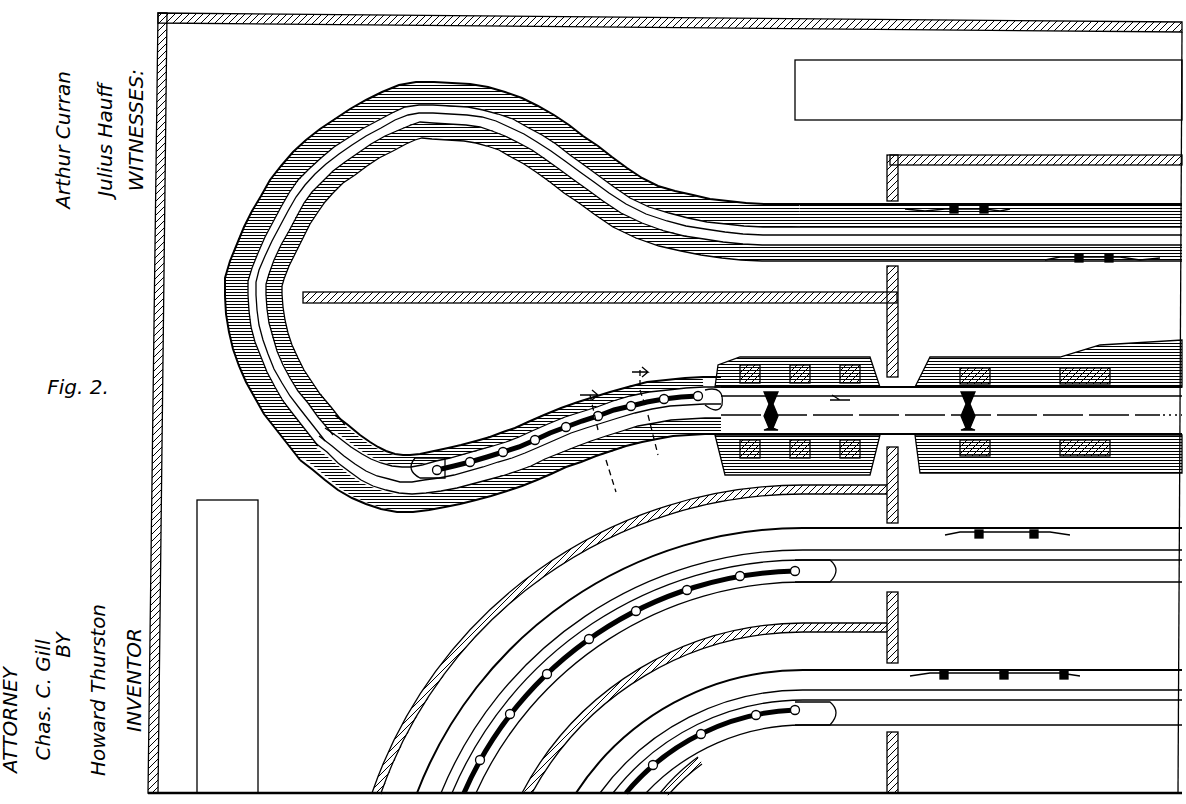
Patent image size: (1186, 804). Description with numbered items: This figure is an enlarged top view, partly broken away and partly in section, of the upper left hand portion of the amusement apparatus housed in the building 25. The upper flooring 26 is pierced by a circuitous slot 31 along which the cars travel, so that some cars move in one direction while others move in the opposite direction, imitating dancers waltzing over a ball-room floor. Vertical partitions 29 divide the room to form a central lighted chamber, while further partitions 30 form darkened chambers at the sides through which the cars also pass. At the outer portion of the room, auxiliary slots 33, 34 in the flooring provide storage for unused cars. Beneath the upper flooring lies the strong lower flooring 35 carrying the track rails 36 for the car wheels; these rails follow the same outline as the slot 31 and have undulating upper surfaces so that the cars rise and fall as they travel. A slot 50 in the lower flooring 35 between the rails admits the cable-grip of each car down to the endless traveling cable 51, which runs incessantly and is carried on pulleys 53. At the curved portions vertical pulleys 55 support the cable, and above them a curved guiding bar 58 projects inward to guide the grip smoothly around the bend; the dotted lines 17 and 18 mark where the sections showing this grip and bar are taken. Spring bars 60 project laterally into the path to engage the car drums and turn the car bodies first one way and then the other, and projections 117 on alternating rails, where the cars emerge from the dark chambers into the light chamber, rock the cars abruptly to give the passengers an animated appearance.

The section line 17— 17 is at (654, 415).
The section line 18— 18 is at (601, 437).
The building 25 is at (128, 550).
The flooring 26 is at (665, 403).
The vertical partitions 29 is at (898, 772).
The partitions 30 is at (472, 625).
The slot 31 is at (612, 152).
The auxiliary slot 33 is at (258, 640).
The auxiliary slot 34 is at (962, 100).
The lower flooring 35 is at (640, 174).
The track rails 36 is at (1045, 372).
The slot 50 is at (715, 230).
The endless traveling cable 51 is at (545, 480).
The pulleys 53 is at (790, 410).
The vertical pulleys 55 is at (670, 398).
The guiding bar 58 is at (722, 392).
The spring bars 60 is at (965, 215).
The projections 117 is at (765, 376).